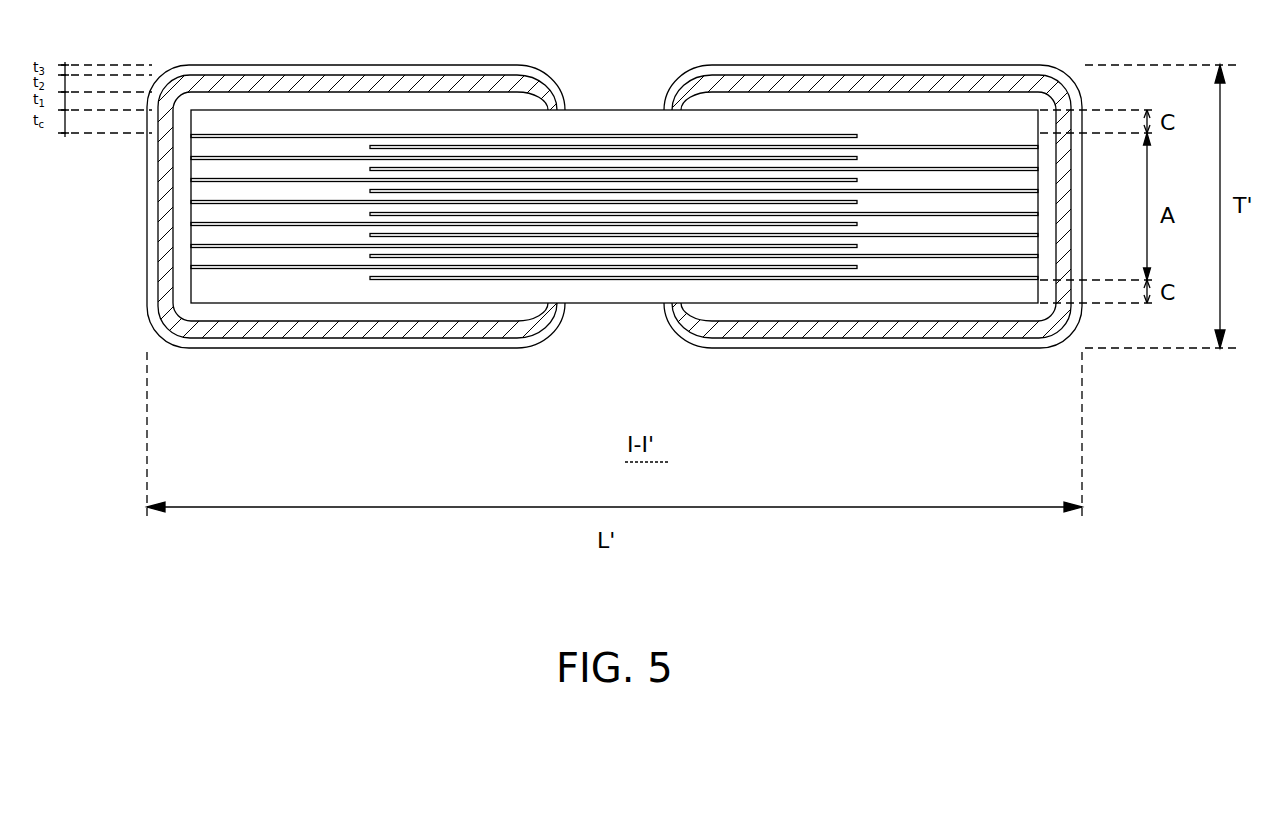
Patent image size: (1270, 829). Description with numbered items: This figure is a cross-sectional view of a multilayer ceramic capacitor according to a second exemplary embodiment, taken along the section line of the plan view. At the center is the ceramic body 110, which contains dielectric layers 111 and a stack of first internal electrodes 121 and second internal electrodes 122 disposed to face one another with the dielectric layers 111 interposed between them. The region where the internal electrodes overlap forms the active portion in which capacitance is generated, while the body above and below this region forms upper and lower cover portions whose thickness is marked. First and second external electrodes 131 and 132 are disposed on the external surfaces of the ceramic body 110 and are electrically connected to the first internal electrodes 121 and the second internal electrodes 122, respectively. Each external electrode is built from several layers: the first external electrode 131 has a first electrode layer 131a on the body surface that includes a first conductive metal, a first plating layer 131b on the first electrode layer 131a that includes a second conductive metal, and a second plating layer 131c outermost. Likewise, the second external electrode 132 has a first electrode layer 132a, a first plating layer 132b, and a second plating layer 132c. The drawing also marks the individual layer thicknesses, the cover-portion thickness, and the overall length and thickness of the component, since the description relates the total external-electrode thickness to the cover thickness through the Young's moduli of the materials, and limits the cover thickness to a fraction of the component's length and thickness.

The ceramic body 110 is at (566, 157).
The dielectric layer 111 is at (207, 257).
The first internal electrode 121 is at (197, 137).
The second internal electrode 122 is at (370, 149).
The first external electrode 131 is at (356, 255).
The first electrode layer 131a is at (300, 312).
The first plating layer 131b is at (376, 326).
The second plating layer 131c is at (283, 400).
The second external electrode 132 is at (873, 255).
The first electrode layer 132a is at (953, 312).
The first plating layer 132b is at (882, 326).
The second plating layer 132c is at (980, 400).